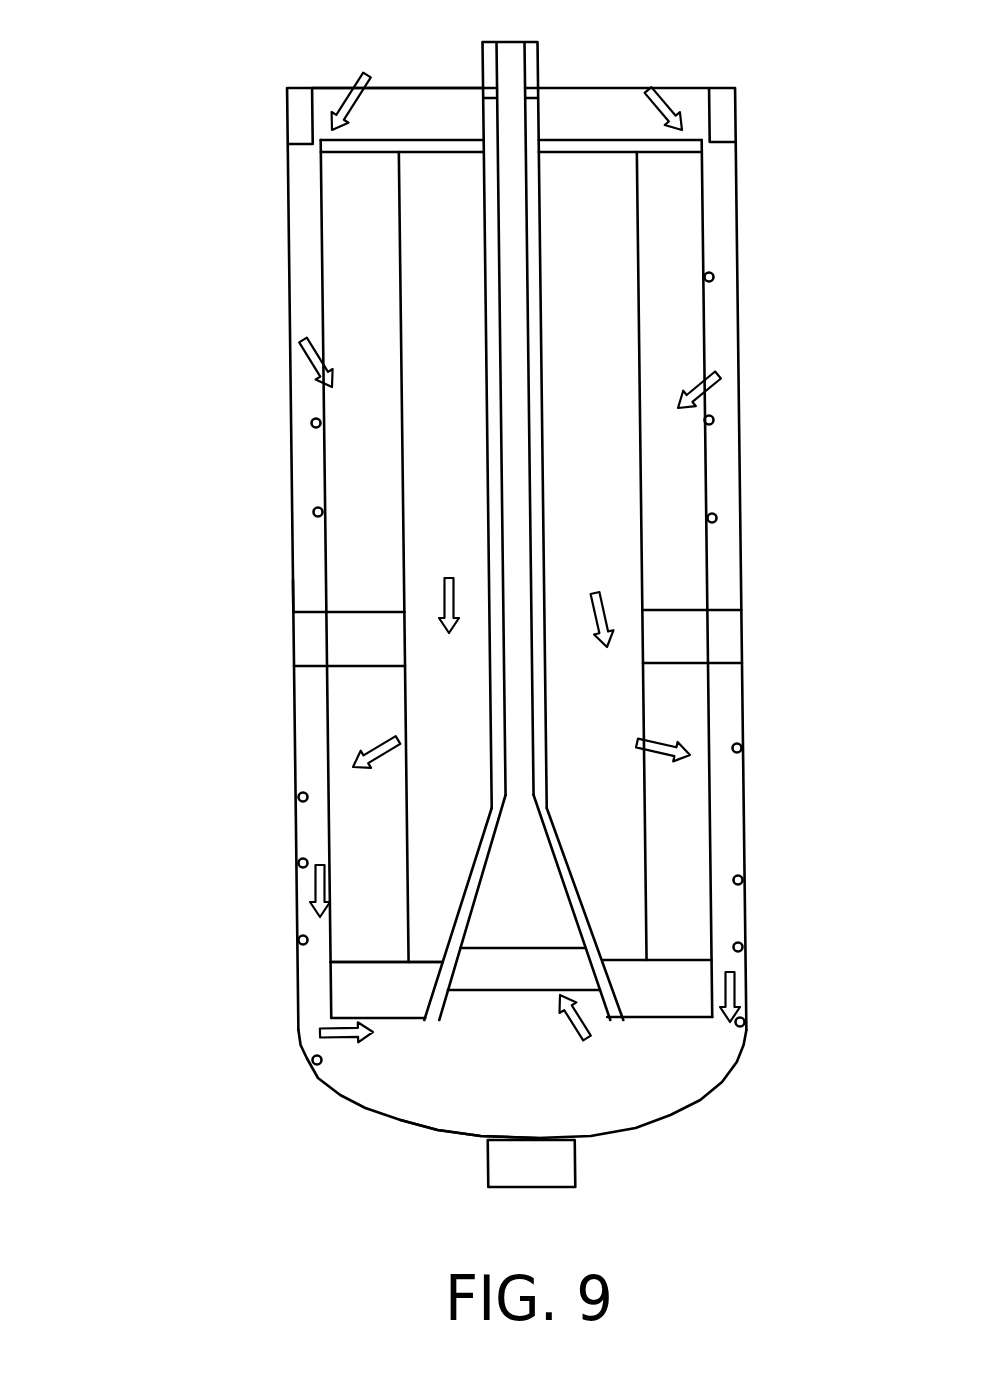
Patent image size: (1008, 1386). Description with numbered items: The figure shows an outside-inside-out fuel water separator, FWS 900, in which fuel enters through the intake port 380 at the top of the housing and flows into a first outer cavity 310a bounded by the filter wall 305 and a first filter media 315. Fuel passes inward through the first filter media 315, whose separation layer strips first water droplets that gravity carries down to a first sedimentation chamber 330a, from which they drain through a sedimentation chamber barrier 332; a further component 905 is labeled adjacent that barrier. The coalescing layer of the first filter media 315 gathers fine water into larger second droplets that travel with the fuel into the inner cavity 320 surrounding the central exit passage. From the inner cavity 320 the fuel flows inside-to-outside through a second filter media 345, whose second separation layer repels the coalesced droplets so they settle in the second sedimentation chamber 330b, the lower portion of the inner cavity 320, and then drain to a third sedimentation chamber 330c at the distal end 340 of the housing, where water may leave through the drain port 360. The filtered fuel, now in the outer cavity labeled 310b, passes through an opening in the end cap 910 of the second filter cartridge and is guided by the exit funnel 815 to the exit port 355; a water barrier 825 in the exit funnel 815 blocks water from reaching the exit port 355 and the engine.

The outside-inside-out FWS 900 is at (124, 61).
The filter wall 305 is at (287, 180).
The intake port 380 is at (340, 89).
The exit port 355 is at (541, 210).
The inner cavity 320 is at (593, 570).
The first outer cavity 310a is at (305, 410).
The first filter media 315 is at (353, 480).
The intermediate plate 905 is at (353, 643).
The sedimentation chamber barrier 332 is at (310, 642).
The lower inner wall 310b is at (310, 790).
The second filter media 345 is at (683, 825).
The first sedimentation chamber 330a is at (303, 598).
The second sedimentation chamber 330b is at (427, 955).
The third sedimentation chamber 330c is at (453, 1120).
The end cap 910 is at (330, 974).
The water barrier 825 is at (515, 970).
The exit funnel 815 is at (630, 1017).
The distal end 340 is at (313, 1083).
The drain port 360 is at (575, 1185).